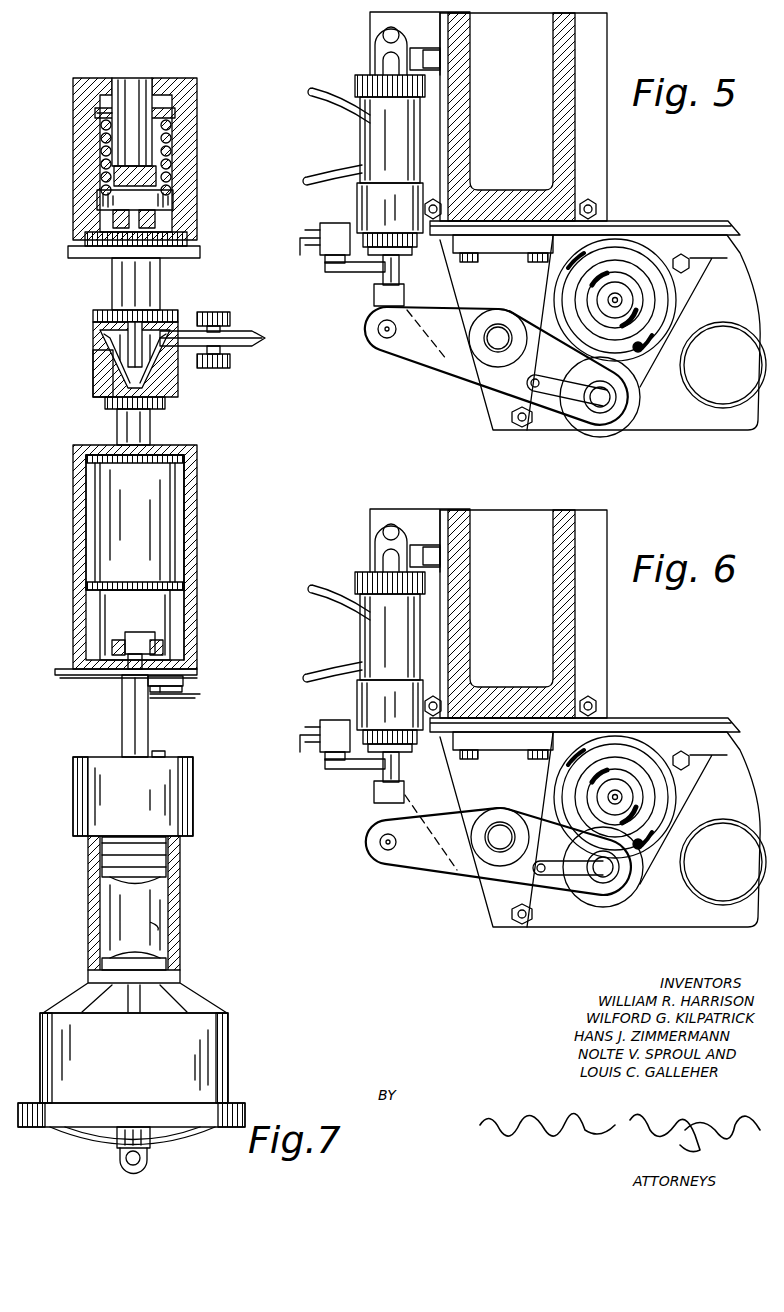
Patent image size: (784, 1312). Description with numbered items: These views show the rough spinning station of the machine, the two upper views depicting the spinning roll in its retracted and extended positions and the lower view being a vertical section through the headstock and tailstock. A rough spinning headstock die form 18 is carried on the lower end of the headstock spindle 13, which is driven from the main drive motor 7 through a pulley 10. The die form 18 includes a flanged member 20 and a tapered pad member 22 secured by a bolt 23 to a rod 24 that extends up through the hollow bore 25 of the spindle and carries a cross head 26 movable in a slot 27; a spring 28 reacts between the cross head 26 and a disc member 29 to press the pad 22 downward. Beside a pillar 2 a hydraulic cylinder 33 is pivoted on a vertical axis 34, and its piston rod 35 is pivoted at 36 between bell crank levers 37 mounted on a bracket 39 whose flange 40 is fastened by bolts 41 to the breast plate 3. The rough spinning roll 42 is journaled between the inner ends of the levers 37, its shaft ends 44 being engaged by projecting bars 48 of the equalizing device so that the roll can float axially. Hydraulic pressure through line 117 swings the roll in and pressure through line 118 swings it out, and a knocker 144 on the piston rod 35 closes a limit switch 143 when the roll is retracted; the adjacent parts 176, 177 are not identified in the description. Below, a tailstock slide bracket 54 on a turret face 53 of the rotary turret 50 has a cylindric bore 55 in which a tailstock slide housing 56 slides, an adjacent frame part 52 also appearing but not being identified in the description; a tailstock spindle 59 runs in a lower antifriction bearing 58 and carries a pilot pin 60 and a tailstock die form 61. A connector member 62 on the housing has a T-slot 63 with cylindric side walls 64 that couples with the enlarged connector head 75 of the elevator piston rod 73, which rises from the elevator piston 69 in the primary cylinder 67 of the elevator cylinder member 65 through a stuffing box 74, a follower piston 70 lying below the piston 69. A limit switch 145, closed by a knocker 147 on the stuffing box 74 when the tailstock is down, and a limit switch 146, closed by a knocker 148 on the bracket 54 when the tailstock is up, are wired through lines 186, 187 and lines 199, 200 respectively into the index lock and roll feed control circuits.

In FIG. 5, the pillar 2 is at (560, 60).
In FIG. 6, the pillar 2 is at (516, 614).
In FIG. 5, the breast plate 3 is at (622, 234).
In FIG. 6, the breast plate 3 is at (585, 711).
In FIG. 6, the main drive motor 7 is at (618, 683).
In FIG. 5, the pulley 10 is at (512, 352).
In FIG. 7, the headstock spindle 13 is at (132, 122).
In FIG. 7, the rough spinning headstock die form 18 is at (92, 320).
In FIG. 7, the flanged member 20 is at (165, 330).
In FIG. 7, the tapered plug or pad member 22 is at (108, 372).
In FIG. 7, the bolt 23 is at (160, 376).
In FIG. 7, the rod 24 is at (140, 325).
In FIG. 7, the hollow bore 25 is at (158, 218).
In FIG. 7, the cross head 26 is at (172, 200).
In FIG. 7, the slot 27 is at (163, 172).
In FIG. 7, the spring 28 is at (103, 148).
In FIG. 7, the disc member 29 is at (97, 117).
In FIG. 5, the hydraulic cylinder 33 is at (380, 128).
In FIG. 6, the hydraulic cylinder 33 is at (371, 662).
In FIG. 5, the pivot axis 34 is at (383, 35).
In FIG. 6, the pivot axis 34 is at (371, 546).
In FIG. 5, the piston rod 35 is at (399, 270).
In FIG. 6, the piston rod 35 is at (406, 777).
In FIG. 5, the pivot 36 is at (385, 333).
In FIG. 6, the pivot 36 is at (385, 846).
In FIG. 7, the bell crank levers 37 is at (220, 316).
In FIG. 5, the bell crank levers 37 is at (420, 352).
In FIG. 6, the bell crank levers 37 is at (443, 862).
In FIG. 5, the bracket 39 is at (503, 256).
In FIG. 6, the bracket 39 is at (503, 755).
In FIG. 5, the flange 40 is at (495, 250).
In FIG. 6, the flange 40 is at (514, 705).
In FIG. 5, the bolts 41 is at (470, 250).
In FIG. 6, the bolts 41 is at (486, 700).
In FIG. 7, the rough spinning roll 42 is at (258, 338).
In FIG. 5, the rough spinning roll 42 is at (610, 430).
In FIG. 6, the rough spinning roll 42 is at (632, 893).
In FIG. 5, the spinning roll shaft ends 44 is at (598, 403).
In FIG. 6, the spinning roll shaft ends 44 is at (604, 880).
In FIG. 5, the projecting bar 48 is at (565, 393).
In FIG. 6, the projecting bar 48 is at (565, 875).
In FIG. 7, the rotary turret 50 is at (158, 110).
In FIG. 5, the rotary turret 50 is at (600, 332).
In FIG. 6, the rotary turret 50 is at (605, 829).
In FIG. 5, the sub frame 52 is at (440, 29).
In FIG. 6, the sub frame 52 is at (461, 703).
In FIG. 5, the turret face 53 is at (690, 299).
In FIG. 6, the turret face 53 is at (703, 852).
In FIG. 7, the tailstock slide bracket 54 is at (78, 520).
In FIG. 5, the tailstock slide bracket 54 is at (670, 305).
In FIG. 6, the tailstock slide bracket 54 is at (693, 803).
In FIG. 7, the tailstock slide bore 55 is at (183, 520).
In FIG. 5, the tailstock slide bore 55 is at (640, 350).
In FIG. 6, the tailstock slide bore 55 is at (655, 857).
In FIG. 7, the tailstock slide housing 56 is at (135, 522).
In FIG. 5, the lower antifriction bearing 58 is at (497, 338).
In FIG. 6, the lower antifriction bearing 58 is at (499, 837).
In FIG. 7, the tailstock spindle 59 is at (146, 428).
In FIG. 7, the pilot pin 60 is at (175, 402).
In FIG. 5, the pilot pin 60 is at (617, 300).
In FIG. 6, the pilot pin 60 is at (615, 794).
In FIG. 7, the tailstock die form 61 is at (98, 395).
In FIG. 5, the tailstock die form 61 is at (657, 300).
In FIG. 6, the tailstock die form 61 is at (676, 775).
In FIG. 7, the connector member 62 is at (147, 617).
In FIG. 7, the T-slot 63 is at (147, 640).
In FIG. 7, the side walls 64 is at (160, 645).
In FIG. 7, the tailstock operating cylinder member 65 is at (176, 900).
In FIG. 7, the primary cylinder 67 is at (162, 928).
In FIG. 7, the actuating or elevator piston 69 is at (166, 877).
In FIG. 7, the follower piston 70 is at (160, 962).
In FIG. 7, the elevator piston rod 73 is at (124, 735).
In FIG. 7, the stuffing box 74 is at (194, 797).
In FIG. 7, the connector head 75 is at (130, 650).
In FIG. 5, the hydraulic line 117 is at (315, 88).
In FIG. 6, the hydraulic line 117 is at (323, 602).
In FIG. 5, the hydraulic line 118 is at (320, 179).
In FIG. 6, the hydraulic line 118 is at (319, 665).
In FIG. 5, the limit switch 143 is at (338, 224).
In FIG. 6, the limit switch 143 is at (335, 724).
In FIG. 5, the knocker 144 is at (340, 273).
In FIG. 6, the knocker 144 is at (344, 790).
In FIG. 7, the limit switch 145 is at (152, 686).
In FIG. 7, the limit switch 146 is at (172, 689).
In FIG. 7, the knocker 147 is at (166, 754).
In FIG. 7, the knocker 148 is at (190, 680).
In FIG. 5, the fitting 176 is at (318, 245).
In FIG. 6, the fitting 176 is at (295, 752).
In FIG. 5, the fitting 177 is at (320, 232).
In FIG. 6, the fitting 177 is at (293, 722).
In FIG. 7, the line 186 is at (68, 679).
In FIG. 7, the line 187 is at (65, 673).
In FIG. 7, the line 199 is at (200, 694).
In FIG. 7, the line 200 is at (210, 698).